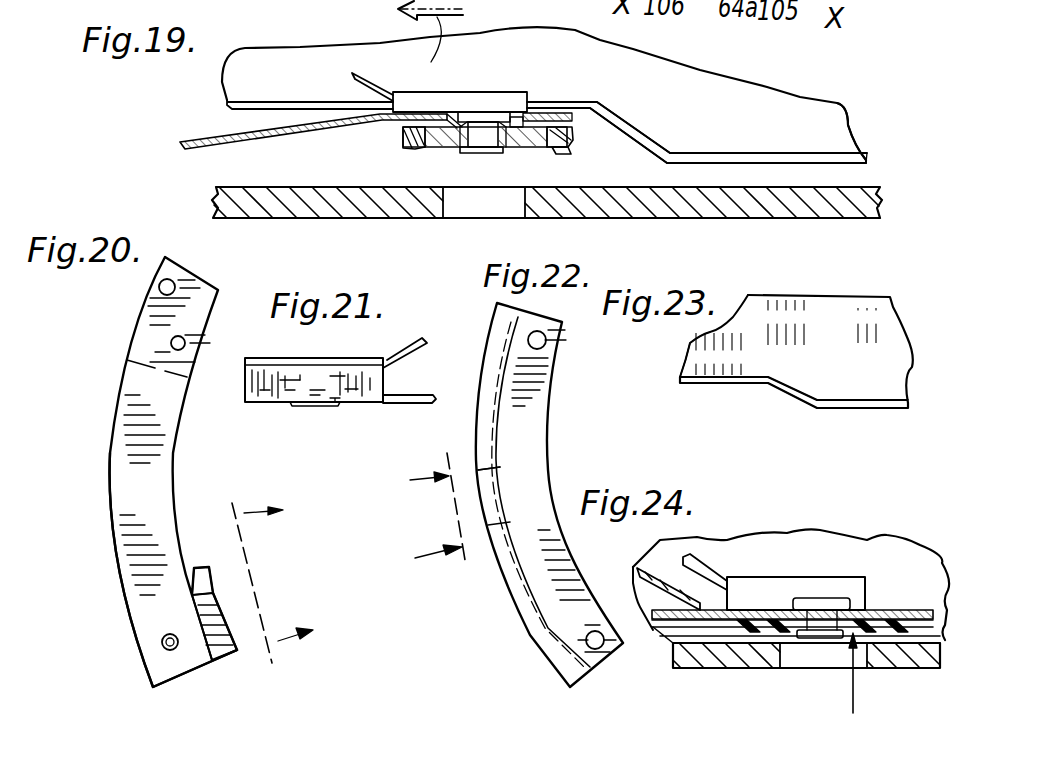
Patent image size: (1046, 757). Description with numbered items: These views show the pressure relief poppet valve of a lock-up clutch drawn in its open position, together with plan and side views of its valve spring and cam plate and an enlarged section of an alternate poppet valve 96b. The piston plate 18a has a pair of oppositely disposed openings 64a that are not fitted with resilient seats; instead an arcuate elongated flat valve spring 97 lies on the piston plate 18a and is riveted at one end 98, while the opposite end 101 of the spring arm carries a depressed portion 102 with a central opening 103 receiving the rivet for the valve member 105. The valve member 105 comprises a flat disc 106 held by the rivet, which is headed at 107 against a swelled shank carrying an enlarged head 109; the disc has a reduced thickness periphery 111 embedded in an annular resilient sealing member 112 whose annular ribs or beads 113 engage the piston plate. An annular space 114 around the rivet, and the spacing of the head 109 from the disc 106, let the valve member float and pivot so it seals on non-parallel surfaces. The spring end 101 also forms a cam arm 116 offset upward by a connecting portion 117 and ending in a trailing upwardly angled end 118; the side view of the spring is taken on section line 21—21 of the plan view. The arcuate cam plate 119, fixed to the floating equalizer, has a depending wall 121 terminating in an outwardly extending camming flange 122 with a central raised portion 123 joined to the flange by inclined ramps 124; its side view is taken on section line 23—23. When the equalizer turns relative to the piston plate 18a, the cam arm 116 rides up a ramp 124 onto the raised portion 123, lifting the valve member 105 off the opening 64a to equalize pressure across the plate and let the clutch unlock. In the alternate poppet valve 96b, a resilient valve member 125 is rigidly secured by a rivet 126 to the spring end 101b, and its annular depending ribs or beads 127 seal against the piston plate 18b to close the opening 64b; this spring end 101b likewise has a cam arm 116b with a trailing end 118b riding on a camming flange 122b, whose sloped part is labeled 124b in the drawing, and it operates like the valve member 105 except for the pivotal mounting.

In FIG. 19, the piston plate 18a is at (694, 205).
In FIG. 24, the piston plate 18b is at (888, 657).
In FIG. 20, the section line 21— 21 is at (292, 581).
In FIG. 22, the section line 23— 23 is at (418, 514).
In FIG. 19, the openings 64a is at (457, 203).
In FIG. 24, the opening 64b is at (799, 655).
In FIG. 24, the poppet valve 96b is at (855, 686).
In FIG. 19, the valve spring 97 is at (210, 141).
In FIG. 20, the valve spring 97 is at (172, 452).
In FIG. 20, the end of valve spring 98 is at (160, 317).
In FIG. 19, the opposite end of spring arm 101 is at (570, 104).
In FIG. 20, the opposite end of spring arm 101 is at (147, 651).
In FIG. 21, the opposite end of spring arm 101 is at (420, 395).
In FIG. 24, the spring end 101b is at (807, 597).
In FIG. 20, the depressed portion 102 is at (163, 638).
In FIG. 21, the depressed portion 102 is at (336, 404).
In FIG. 19, the central opening 103 is at (493, 112).
In FIG. 20, the central opening 103 is at (178, 664).
In FIG. 19, the valve member 105 is at (513, 153).
In FIG. 19, the flat disc 106 is at (428, 130).
In FIG. 19, the rivet head 107 is at (481, 153).
In FIG. 19, the enlarged head 109 is at (486, 112).
In FIG. 19, the reduced thickness periphery 111 is at (407, 146).
In FIG. 19, the annular resilient sealing member 112 is at (569, 139).
In FIG. 19, the annular ribs or beads 113 is at (561, 156).
In FIG. 19, the annular space 114 is at (433, 147).
In FIG. 19, the cam arm 116 is at (449, 97).
In FIG. 20, the cam arm 116 is at (220, 627).
In FIG. 21, the cam arm 116 is at (312, 367).
In FIG. 24, the cam arm 116b is at (742, 576).
In FIG. 21, the connecting portion 117 is at (311, 378).
In FIG. 19, the trailing upwardly angled end 118 is at (352, 77).
In FIG. 20, the trailing upwardly angled end 118 is at (208, 566).
In FIG. 21, the trailing upwardly angled end 118 is at (403, 343).
In FIG. 24, the trailing end 118b is at (706, 560).
In FIG. 22, the cam plate 119 is at (532, 423).
In FIG. 19, the depending wall 121 is at (830, 57).
In FIG. 19, the camming flange 122 is at (847, 147).
In FIG. 22, the camming flange 122 is at (488, 345).
In FIG. 23, the camming flange 122 is at (891, 388).
In FIG. 24, the camming flange 122b is at (925, 573).
In FIG. 19, the central raised portion 123 is at (538, 112).
In FIG. 22, the central raised portion 123 is at (500, 487).
In FIG. 23, the central raised portion 123 is at (694, 352).
In FIG. 19, the inclined ramps 124 is at (648, 134).
In FIG. 23, the inclined ramps 124 is at (797, 388).
In FIG. 24, the sloped portion 124b is at (646, 560).
In FIG. 24, the resilient valve member 125 is at (773, 638).
In FIG. 24, the rivet 126 is at (745, 588).
In FIG. 24, the annular depending ribs or beads 127 is at (740, 638).